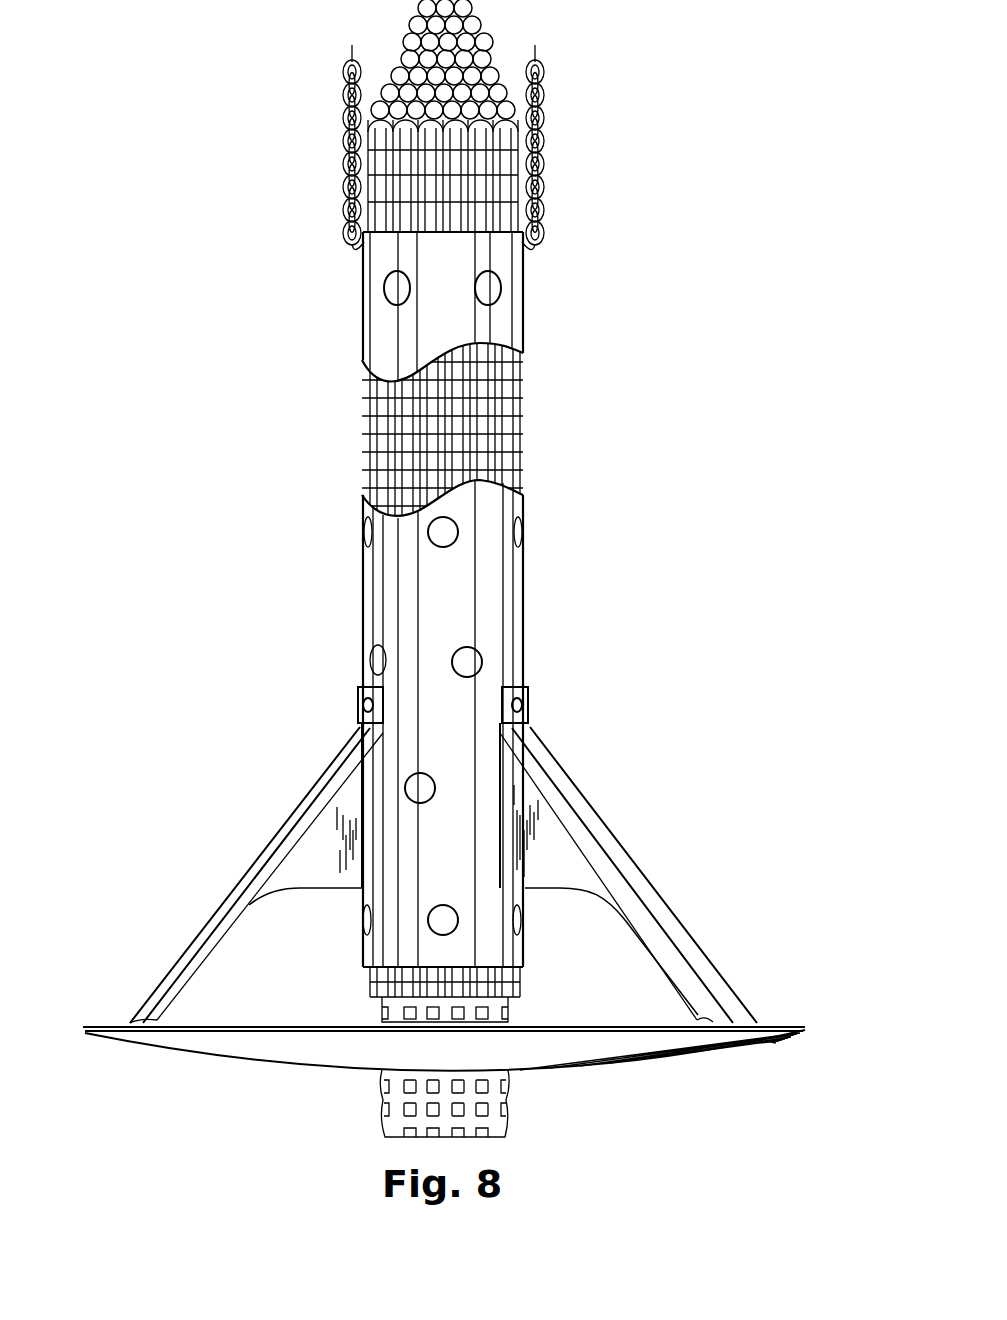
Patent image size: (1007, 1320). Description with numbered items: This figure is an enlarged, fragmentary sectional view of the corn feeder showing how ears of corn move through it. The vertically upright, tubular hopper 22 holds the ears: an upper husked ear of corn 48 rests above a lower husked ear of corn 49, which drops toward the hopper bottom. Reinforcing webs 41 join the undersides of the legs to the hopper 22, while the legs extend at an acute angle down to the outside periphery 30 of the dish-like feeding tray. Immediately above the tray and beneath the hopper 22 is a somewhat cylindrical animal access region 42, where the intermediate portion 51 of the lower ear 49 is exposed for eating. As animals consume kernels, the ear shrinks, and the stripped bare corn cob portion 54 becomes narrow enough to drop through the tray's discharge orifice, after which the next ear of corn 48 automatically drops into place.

The hopper 22 is at (503, 372).
The upper husked ear of corn 48 is at (482, 417).
The web 41 is at (302, 867).
The animal access region 42 is at (343, 1000).
The lower husked ear of corn 49 is at (487, 987).
The intermediate portion of the lower ear 51 is at (493, 1010).
The outside periphery of the tray 30 is at (130, 1035).
The bare corn cob portion 54 is at (492, 1102).